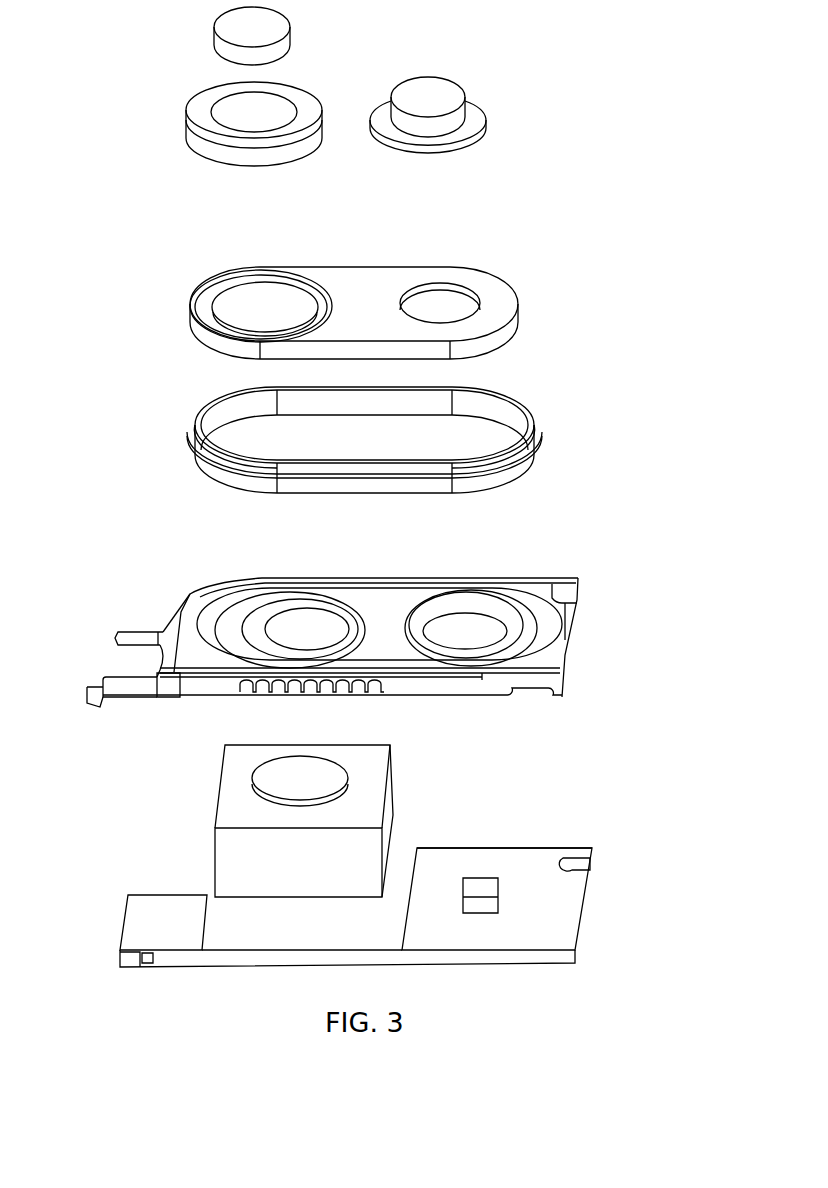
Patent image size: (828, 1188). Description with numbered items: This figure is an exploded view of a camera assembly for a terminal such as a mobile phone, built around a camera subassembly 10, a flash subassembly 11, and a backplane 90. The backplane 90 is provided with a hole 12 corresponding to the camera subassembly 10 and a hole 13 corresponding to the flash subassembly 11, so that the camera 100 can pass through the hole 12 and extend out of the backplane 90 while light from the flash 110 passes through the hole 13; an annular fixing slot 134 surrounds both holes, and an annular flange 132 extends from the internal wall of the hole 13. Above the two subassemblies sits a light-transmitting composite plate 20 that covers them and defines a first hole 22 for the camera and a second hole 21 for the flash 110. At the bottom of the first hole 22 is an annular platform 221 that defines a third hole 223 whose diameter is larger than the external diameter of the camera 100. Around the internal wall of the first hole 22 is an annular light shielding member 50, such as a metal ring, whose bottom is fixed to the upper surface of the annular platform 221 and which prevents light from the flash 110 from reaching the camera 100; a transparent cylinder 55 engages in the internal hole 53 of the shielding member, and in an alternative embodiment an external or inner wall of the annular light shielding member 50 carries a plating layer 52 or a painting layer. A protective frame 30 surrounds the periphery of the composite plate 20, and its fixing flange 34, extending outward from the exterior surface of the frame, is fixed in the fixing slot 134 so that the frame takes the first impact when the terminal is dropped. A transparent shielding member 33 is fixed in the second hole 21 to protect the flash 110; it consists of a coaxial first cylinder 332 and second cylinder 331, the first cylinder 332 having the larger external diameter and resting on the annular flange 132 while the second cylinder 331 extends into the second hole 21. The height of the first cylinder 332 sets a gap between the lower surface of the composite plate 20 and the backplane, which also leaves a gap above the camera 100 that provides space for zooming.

The camera subassembly 10 is at (352, 855).
The flash subassembly 11 is at (487, 883).
The hole 12 is at (297, 610).
The hole 13 is at (473, 640).
The composite plate 20 is at (378, 277).
The second hole 21 is at (440, 300).
The first hole 22 is at (220, 269).
The protective frame 30 is at (370, 458).
The transparent shielding member 33 is at (532, 120).
The fixing flange 34 is at (545, 452).
The annular light shielding member 50 is at (254, 116).
The plating layer 52 is at (297, 107).
The internal hole 53 is at (232, 107).
The transparent cylinder 55 is at (215, 50).
The backplane 90 is at (355, 625).
The camera 100 is at (278, 792).
The flash 110 is at (478, 890).
The annular flange 132 is at (512, 624).
The annular fixing slot 134 is at (208, 637).
The annular platform 221 is at (300, 287).
The third hole 223 is at (270, 310).
The second cylinder 331 is at (452, 97).
The first cylinder 332 is at (472, 123).